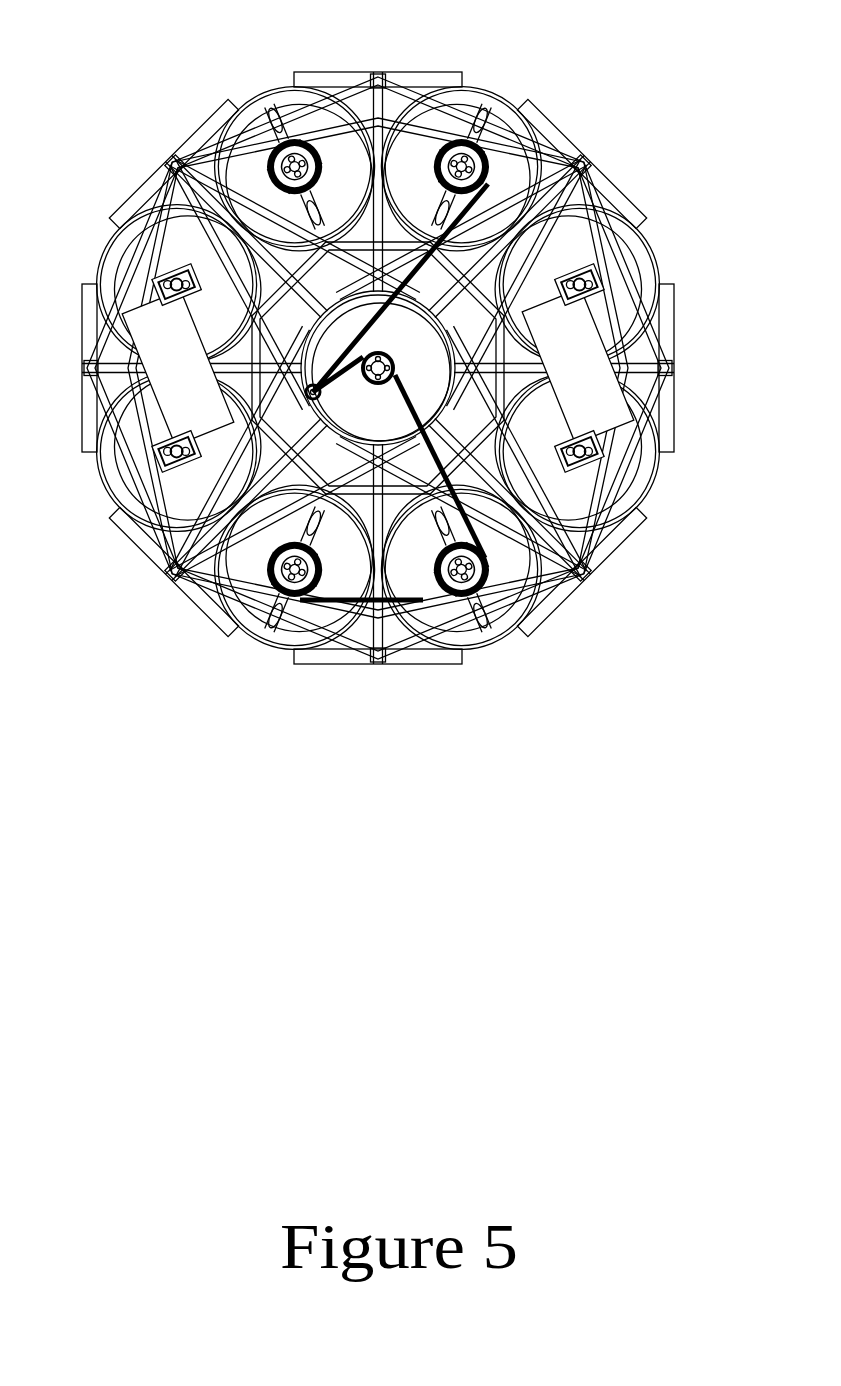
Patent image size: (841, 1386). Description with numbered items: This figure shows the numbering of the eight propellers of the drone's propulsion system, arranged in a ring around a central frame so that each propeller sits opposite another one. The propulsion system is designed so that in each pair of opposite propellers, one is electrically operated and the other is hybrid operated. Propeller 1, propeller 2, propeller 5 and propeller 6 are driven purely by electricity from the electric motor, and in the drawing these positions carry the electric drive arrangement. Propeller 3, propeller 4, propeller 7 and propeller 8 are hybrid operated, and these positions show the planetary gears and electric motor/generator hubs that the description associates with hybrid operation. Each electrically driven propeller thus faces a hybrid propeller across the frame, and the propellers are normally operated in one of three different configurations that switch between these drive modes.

The propeller 1 is at (153, 450).
The propeller 2 is at (156, 285).
The propeller 3 is at (295, 143).
The propeller 4 is at (460, 143).
The propeller 5 is at (607, 285).
The propeller 6 is at (607, 450).
The propeller 7 is at (460, 598).
The propeller 8 is at (295, 598).